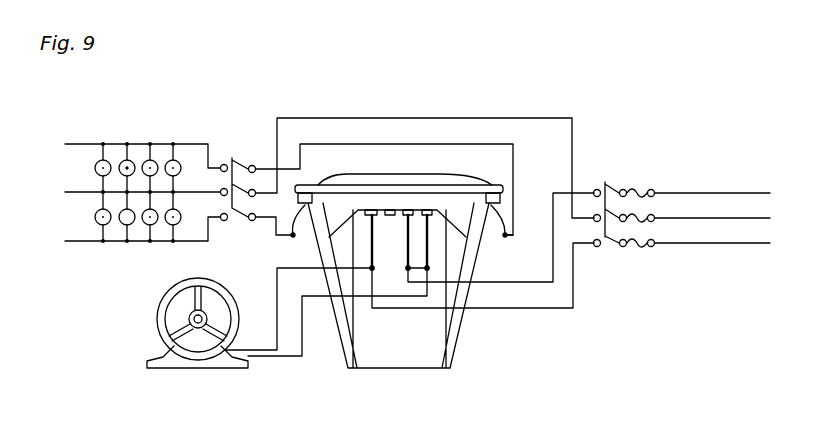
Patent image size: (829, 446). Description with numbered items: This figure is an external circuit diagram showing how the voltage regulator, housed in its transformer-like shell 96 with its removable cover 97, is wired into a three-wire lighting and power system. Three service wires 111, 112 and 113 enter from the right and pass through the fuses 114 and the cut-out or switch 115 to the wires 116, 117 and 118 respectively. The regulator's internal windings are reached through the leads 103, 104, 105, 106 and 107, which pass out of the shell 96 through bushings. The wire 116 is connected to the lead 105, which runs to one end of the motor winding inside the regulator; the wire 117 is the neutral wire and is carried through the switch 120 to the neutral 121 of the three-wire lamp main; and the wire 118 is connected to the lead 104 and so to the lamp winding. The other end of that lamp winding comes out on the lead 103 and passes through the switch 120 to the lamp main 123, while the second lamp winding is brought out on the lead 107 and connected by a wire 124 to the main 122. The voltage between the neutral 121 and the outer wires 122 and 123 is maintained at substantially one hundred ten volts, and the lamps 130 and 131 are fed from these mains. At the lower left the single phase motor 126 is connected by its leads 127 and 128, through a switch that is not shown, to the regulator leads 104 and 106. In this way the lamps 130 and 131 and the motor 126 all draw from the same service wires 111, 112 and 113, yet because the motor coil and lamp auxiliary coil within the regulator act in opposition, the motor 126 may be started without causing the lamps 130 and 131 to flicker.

The shell 96 is at (450, 336).
The removable cover 97 is at (462, 166).
The lead 103 is at (294, 239).
The lead 104 is at (373, 248).
The lead 105 is at (411, 248).
The lead 106 is at (430, 263).
The lead 107 is at (496, 222).
The service wire 111 is at (761, 192).
The service wire 112 is at (758, 218).
The service wire 113 is at (757, 243).
The fuses 114 is at (685, 157).
The cut-out or switch 115 is at (626, 160).
The wire 116 is at (553, 252).
The neutral wire 117 is at (546, 118).
The wire 118 is at (545, 308).
The switch 120 is at (258, 130).
The neutral 121 is at (65, 192).
The main 122 is at (65, 144).
The lamp main 123 is at (65, 241).
The wire 124 is at (432, 94).
The motor 126 is at (160, 306).
The lead 127 is at (276, 302).
The lead 128 is at (302, 310).
The lamps 130 is at (127, 163).
The lamps 131 is at (130, 218).